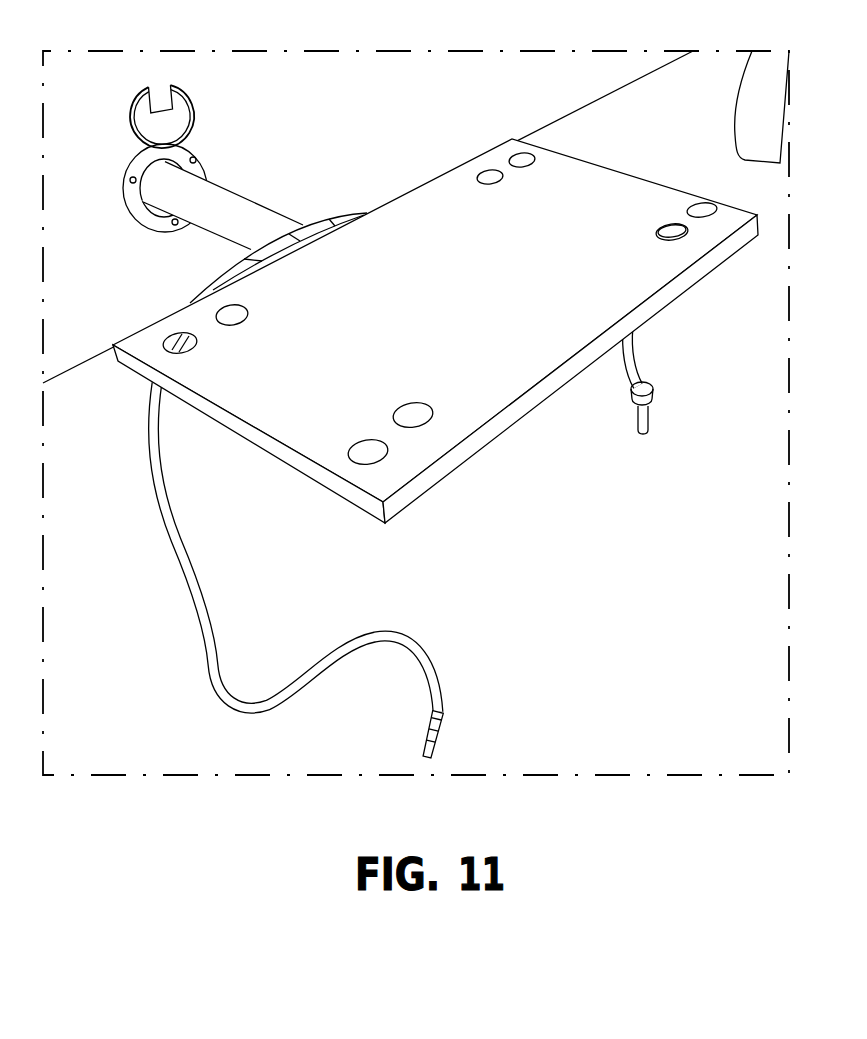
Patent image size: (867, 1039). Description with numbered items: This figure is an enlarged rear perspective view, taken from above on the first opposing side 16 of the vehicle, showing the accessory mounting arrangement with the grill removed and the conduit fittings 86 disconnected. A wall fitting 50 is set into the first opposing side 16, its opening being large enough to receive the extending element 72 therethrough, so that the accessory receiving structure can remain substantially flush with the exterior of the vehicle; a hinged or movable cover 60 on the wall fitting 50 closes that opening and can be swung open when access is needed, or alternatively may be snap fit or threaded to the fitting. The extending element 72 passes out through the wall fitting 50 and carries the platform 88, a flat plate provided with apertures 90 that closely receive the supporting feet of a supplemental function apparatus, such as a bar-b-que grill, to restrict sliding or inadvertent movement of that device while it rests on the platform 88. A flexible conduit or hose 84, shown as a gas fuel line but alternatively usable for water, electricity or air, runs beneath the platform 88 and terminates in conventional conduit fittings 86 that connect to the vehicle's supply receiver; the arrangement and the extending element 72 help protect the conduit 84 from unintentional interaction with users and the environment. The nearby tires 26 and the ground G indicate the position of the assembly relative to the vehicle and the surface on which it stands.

The first opposing side 16 is at (346, 113).
The tires 26 is at (763, 145).
The wall fitting 50 is at (128, 181).
The hinged or movable cover 60 is at (147, 108).
The extending element 72 is at (238, 210).
The flexible conduit or hose 84 is at (217, 608).
The conduit fittings 86 is at (652, 418).
The platform 88 is at (575, 245).
The apertures 90 is at (408, 404).
The ground G is at (565, 621).